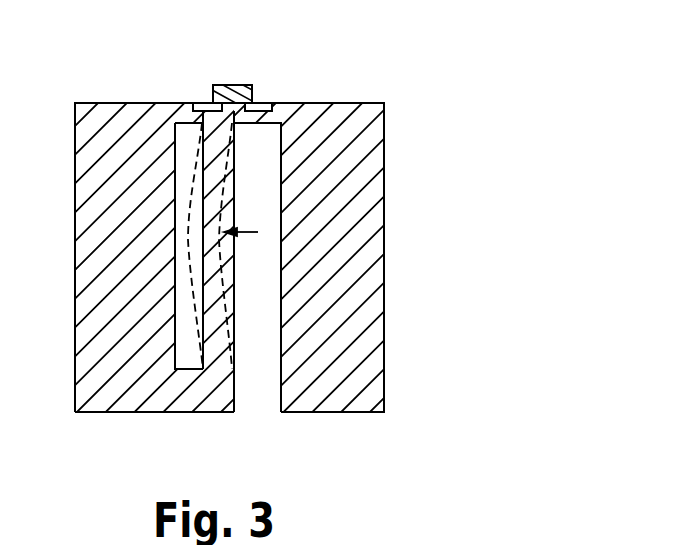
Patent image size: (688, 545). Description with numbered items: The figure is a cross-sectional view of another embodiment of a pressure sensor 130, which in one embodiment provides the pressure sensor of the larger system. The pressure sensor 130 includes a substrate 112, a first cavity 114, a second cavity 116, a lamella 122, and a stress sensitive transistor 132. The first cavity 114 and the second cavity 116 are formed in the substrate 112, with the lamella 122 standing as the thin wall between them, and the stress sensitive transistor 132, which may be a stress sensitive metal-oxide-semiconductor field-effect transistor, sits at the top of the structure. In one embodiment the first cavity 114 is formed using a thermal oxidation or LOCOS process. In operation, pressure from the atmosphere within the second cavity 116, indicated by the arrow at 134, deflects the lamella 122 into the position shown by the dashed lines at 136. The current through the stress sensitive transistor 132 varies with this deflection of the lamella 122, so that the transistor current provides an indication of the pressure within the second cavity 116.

The pressure sensor 130 is at (339, 250).
The substrate 112 is at (383, 265).
The first cavity 114 is at (185, 356).
The second cavity 116 is at (256, 390).
The lamella 122 is at (220, 355).
The stress sensitive transistor 132 is at (237, 84).
The pressure indication 134 is at (250, 234).
The deflection indication 136 is at (192, 181).